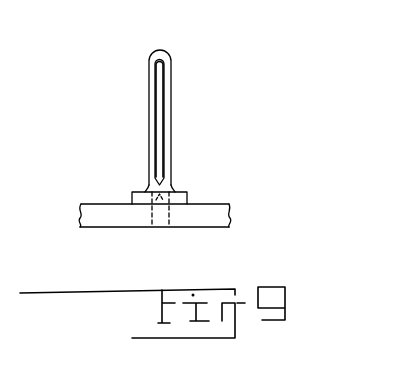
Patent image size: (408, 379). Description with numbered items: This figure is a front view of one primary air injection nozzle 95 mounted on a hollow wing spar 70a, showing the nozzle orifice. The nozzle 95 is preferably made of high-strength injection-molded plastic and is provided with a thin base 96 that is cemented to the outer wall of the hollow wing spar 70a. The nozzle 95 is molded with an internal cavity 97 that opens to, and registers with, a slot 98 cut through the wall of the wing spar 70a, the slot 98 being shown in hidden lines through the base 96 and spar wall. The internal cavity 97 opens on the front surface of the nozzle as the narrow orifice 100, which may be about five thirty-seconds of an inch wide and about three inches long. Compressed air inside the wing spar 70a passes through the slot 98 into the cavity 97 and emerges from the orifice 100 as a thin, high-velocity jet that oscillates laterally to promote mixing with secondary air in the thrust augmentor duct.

The hollow wing spar 70a is at (103, 208).
The primary air injection nozzle 95 is at (168, 52).
The thin base 96 is at (188, 197).
The internal cavity 97 is at (178, 186).
The slot 98 is at (165, 221).
The narrow orifice 100 is at (161, 125).